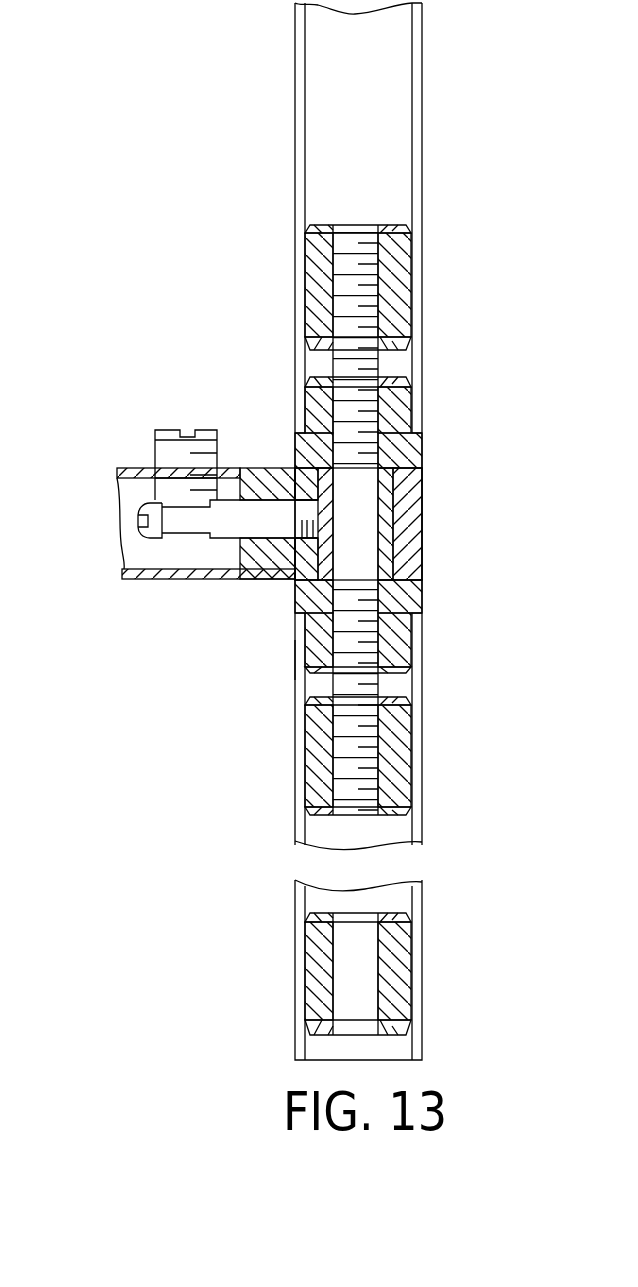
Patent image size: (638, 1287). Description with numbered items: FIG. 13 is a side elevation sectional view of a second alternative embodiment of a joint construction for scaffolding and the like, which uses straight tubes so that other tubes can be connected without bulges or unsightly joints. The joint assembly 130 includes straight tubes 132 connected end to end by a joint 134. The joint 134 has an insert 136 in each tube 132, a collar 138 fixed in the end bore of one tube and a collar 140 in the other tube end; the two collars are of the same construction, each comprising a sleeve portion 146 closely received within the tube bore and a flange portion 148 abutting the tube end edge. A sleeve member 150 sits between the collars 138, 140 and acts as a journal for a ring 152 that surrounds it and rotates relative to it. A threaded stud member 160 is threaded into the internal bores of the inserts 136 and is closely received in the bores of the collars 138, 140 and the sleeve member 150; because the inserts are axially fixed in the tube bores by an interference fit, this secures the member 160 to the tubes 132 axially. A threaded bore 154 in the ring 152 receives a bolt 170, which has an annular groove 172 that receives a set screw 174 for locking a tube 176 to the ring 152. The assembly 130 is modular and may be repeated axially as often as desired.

The joint assembly 130 is at (494, 462).
The straight tubes 132 is at (422, 206).
The joint 134 is at (466, 537).
The insert 136 is at (407, 293).
The collar 138 is at (307, 417).
The collar 140 is at (298, 632).
The sleeve portion 146 is at (298, 660).
The flange portion 148 is at (293, 598).
The sleeve member 150 is at (387, 517).
The ring 152 is at (405, 565).
The threaded bore 154 is at (293, 472).
The threaded stud member 160 is at (355, 242).
The bolt 170 is at (132, 565).
The annular groove 172 is at (185, 527).
The set screw 174 is at (155, 440).
The tube 176 is at (150, 582).